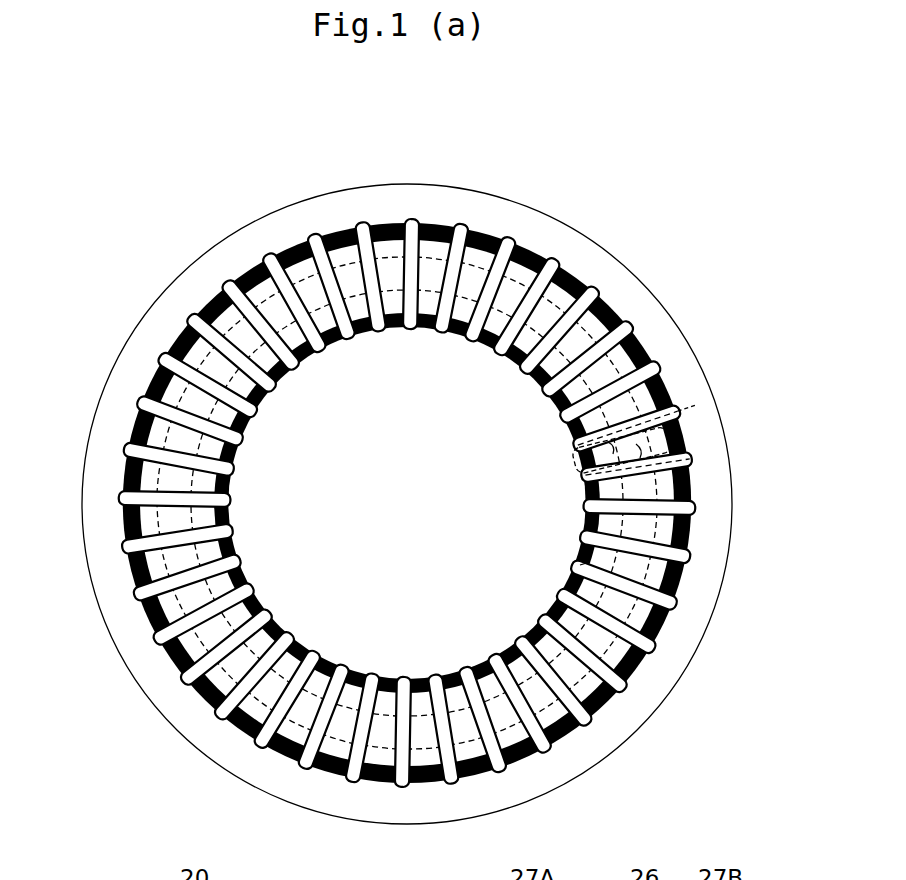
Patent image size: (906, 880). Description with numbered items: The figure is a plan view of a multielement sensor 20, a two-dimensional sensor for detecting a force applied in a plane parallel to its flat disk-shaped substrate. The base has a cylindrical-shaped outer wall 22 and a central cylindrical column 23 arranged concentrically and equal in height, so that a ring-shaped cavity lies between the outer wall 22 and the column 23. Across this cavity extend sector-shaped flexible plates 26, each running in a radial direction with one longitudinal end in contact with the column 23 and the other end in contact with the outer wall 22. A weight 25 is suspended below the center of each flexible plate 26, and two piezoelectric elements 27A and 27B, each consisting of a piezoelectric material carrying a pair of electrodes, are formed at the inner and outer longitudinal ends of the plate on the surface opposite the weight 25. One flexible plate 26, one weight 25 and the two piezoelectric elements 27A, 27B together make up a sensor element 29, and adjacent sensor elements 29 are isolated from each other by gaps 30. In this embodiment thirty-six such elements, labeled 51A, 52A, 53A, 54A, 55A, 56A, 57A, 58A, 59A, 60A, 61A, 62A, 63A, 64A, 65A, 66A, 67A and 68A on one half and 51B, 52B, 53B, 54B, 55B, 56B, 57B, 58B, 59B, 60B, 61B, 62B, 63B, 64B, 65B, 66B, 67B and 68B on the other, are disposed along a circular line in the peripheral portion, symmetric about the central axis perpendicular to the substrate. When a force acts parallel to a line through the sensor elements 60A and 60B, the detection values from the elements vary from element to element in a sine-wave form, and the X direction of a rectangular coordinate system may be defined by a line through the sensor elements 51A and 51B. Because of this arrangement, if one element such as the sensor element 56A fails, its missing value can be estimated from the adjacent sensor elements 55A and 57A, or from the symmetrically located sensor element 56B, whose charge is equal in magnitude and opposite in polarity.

The multielement sensor 20 is at (258, 802).
The cylindrical-shaped outer wall 22 is at (732, 502).
The cylindrical column 23 is at (373, 504).
The weight 25 is at (590, 477).
The sector-shaped flexible plate 26 is at (603, 441).
The piezoelectric element 27A is at (578, 470).
The piezoelectric element 27B is at (709, 420).
The sensor element 29 is at (578, 453).
The gap 30 is at (580, 565).
The sensor element 51A is at (710, 480).
The sensor element 52A is at (709, 441).
The sensor element 53A is at (685, 381).
The sensor element 54A is at (659, 338).
The sensor element 55A is at (627, 299).
The sensor element 56A is at (589, 266).
The sensor element 57A is at (545, 239).
The sensor element 58A is at (496, 220).
The sensor element 59A is at (446, 211).
The sensor element 60A is at (394, 212).
The sensor element 61A is at (350, 217).
The sensor element 62A is at (307, 235).
The sensor element 63A is at (256, 259).
The sensor element 64A is at (215, 285).
The sensor element 65A is at (179, 317).
The sensor element 66A is at (151, 362).
The sensor element 67A is at (125, 410).
The sensor element 68A is at (113, 462).
The sensor element 51B is at (111, 514).
The sensor element 52B is at (120, 564).
The sensor element 53B is at (134, 612).
The sensor element 54B is at (158, 658).
The sensor element 55B is at (190, 697).
The sensor element 56B is at (227, 733).
The sensor element 57B is at (270, 759).
The sensor element 58B is at (321, 785).
The sensor element 59B is at (371, 794).
The sensor element 60B is at (421, 669).
The sensor element 61B is at (452, 664).
The sensor element 62B is at (531, 775).
The sensor element 63B is at (574, 751).
The sensor element 64B is at (612, 721).
The sensor element 65B is at (646, 683).
The sensor element 66B is at (672, 640).
The sensor element 67B is at (691, 594).
The sensor element 68B is at (702, 546).